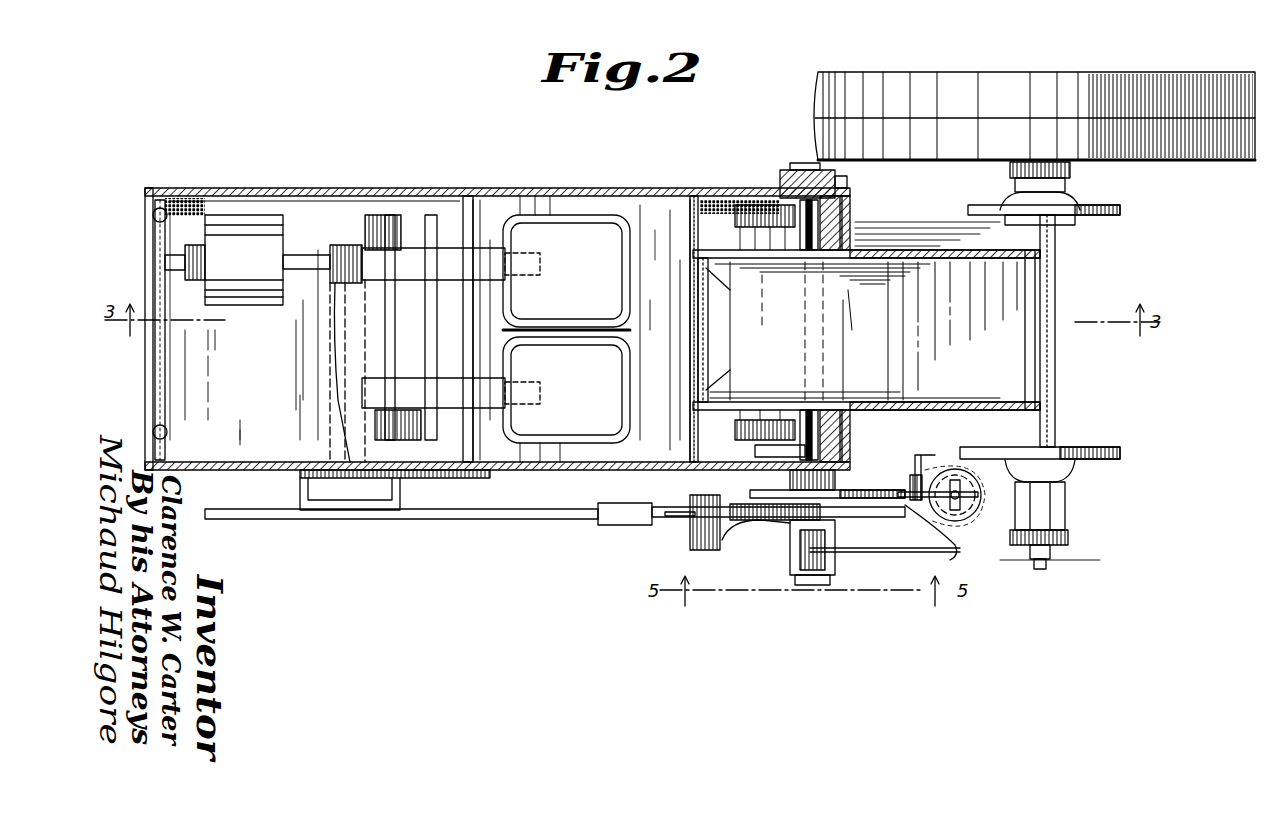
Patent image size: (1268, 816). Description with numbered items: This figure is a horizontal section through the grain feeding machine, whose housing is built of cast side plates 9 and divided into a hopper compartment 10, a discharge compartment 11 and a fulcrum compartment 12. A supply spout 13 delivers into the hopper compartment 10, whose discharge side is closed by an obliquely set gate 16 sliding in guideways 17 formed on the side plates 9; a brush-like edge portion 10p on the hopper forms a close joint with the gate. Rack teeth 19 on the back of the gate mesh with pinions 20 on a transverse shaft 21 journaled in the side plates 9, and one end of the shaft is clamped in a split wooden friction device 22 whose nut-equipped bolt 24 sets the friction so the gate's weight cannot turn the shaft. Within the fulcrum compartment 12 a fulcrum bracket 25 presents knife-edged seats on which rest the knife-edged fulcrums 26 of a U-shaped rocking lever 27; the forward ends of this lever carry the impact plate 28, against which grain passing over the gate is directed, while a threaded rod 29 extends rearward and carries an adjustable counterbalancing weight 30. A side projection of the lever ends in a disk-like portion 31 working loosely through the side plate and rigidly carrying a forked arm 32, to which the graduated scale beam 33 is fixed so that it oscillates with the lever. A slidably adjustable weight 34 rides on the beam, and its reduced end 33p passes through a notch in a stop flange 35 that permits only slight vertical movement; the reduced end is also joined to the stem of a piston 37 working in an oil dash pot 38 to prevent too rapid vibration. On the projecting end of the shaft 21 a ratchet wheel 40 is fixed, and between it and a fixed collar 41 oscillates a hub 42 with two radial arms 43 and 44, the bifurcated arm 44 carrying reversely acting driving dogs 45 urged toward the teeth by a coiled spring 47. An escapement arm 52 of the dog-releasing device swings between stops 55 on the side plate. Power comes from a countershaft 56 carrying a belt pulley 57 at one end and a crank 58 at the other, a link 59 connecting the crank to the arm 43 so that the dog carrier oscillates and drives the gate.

The side plates 9 is at (570, 188).
The hopper compartment 10 is at (866, 330).
The brush-like edge portion 10p is at (706, 268).
The discharge compartment 11 is at (661, 245).
The fulcrum compartment 12 is at (241, 424).
The supply spout 13 is at (1036, 292).
The gate 16 is at (660, 330).
The guideways 17 is at (695, 190).
The rack teeth 19 is at (745, 205).
The pinion 20 is at (845, 205).
The transverse shaft 21 is at (800, 240).
The friction device 22 is at (800, 170).
The nut-equipped bolt 24 is at (847, 182).
The fulcrum bracket 25 is at (420, 250).
The knife-edged fulcrums 26 is at (392, 215).
The rocking lever 27 is at (445, 285).
The impact plate 28 is at (566, 329).
The threaded rod 29 is at (308, 258).
The counterbalancing weight 30 is at (224, 260).
The disk-like portion 31 is at (352, 462).
The forked arm 32 is at (405, 508).
The scale beam 33 is at (472, 519).
The reduced end 33p is at (805, 450).
The slidably adjustable weight 34 is at (615, 525).
The stop flange 35 is at (935, 452).
The piston 37 is at (958, 512).
The dash pot 38 is at (968, 510).
The ratchet wheel 40 is at (931, 538).
The fixed collar 41 is at (835, 577).
The hub 42 is at (790, 548).
The arm 43 is at (840, 540).
The arm 44 is at (728, 532).
The driving dog 45 is at (718, 507).
The coiled spring 47 is at (676, 512).
The escapement arm 52 is at (835, 492).
The stops 55 is at (838, 478).
The countershaft 56 is at (1056, 318).
The pulley 57 is at (965, 82).
The crank 58 is at (1050, 556).
The link 59 is at (1010, 585).